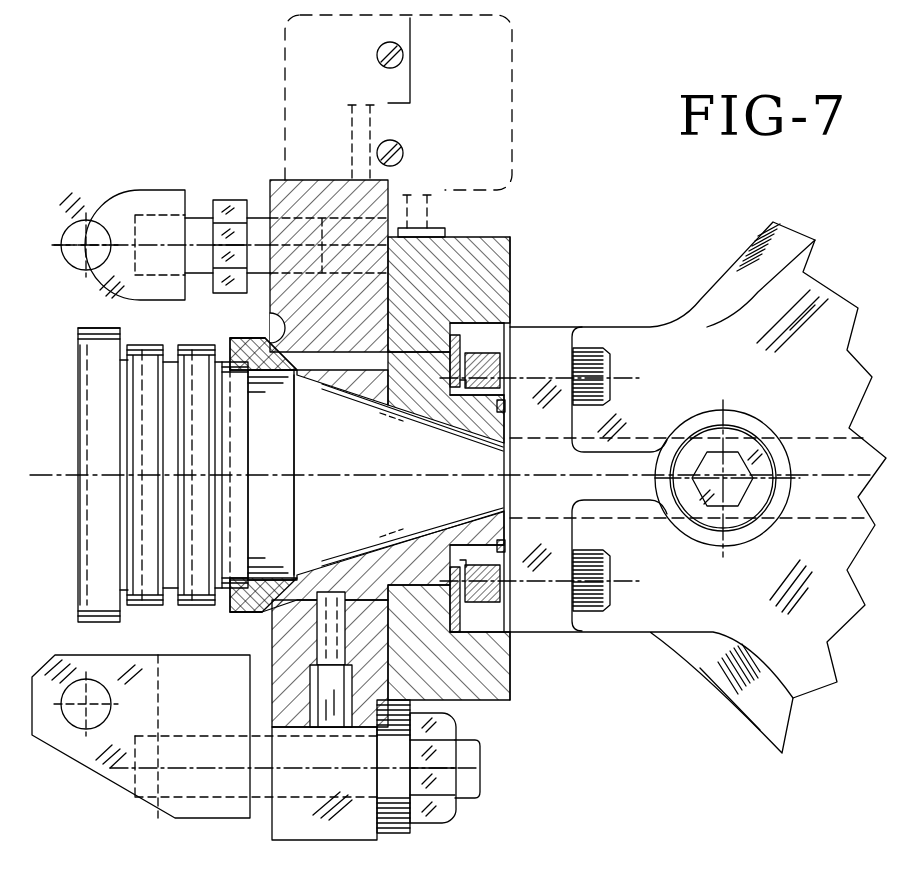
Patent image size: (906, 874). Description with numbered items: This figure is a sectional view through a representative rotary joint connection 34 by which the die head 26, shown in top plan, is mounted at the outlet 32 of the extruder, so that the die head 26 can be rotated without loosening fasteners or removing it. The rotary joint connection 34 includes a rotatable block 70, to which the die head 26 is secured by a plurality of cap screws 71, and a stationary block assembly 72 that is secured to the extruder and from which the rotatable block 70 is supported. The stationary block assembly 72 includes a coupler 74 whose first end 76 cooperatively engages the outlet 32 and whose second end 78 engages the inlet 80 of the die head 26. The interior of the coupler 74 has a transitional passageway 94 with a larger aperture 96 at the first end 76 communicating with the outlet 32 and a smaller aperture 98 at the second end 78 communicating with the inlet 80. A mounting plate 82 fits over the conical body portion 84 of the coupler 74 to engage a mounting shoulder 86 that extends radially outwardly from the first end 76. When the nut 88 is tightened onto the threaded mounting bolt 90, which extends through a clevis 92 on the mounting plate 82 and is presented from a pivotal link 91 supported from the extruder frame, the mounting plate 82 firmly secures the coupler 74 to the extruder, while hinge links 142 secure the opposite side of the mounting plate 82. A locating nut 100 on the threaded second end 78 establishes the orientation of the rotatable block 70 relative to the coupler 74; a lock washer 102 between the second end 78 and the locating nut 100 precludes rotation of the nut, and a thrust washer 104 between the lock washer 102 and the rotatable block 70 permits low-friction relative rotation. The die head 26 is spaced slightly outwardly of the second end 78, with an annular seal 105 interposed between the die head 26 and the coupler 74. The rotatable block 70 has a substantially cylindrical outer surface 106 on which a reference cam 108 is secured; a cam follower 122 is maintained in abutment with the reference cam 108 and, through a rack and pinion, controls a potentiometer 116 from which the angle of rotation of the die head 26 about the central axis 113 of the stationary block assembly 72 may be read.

The die head 26 is at (708, 700).
The outlet 32 is at (70, 508).
The rotary joint connection 34 is at (556, 207).
The rotatable block 70 is at (518, 264).
The cap screws 71 is at (612, 370).
The stationary block assembly 72 is at (257, 628).
The coupler 74 is at (400, 390).
The first end 76 is at (228, 608).
The second end 78 is at (505, 430).
The inlet 80 is at (505, 487).
The mounting plate 82 is at (282, 192).
The conical body portion 84 is at (385, 572).
The mounting shoulder 86 is at (272, 326).
The nut 88 is at (442, 812).
The threaded mounting bolt 90 is at (472, 777).
The pivotal link 91 is at (100, 765).
The clevis 92 is at (300, 818).
The transitional passageway 94 is at (357, 475).
The larger aperture 96 is at (282, 440).
The smaller aperture 98 is at (542, 520).
The locating nut 100 is at (523, 342).
The lock washer 102 is at (480, 617).
The thrust washer 104 is at (462, 600).
The annular seal 105 is at (505, 547).
The cylindrical outer surface 106 is at (518, 698).
The reference cam 108 is at (500, 235).
The central axis 113 is at (55, 470).
The potentiometer 116 is at (518, 63).
The cam follower 122 is at (445, 228).
The hinge links 142 is at (122, 200).